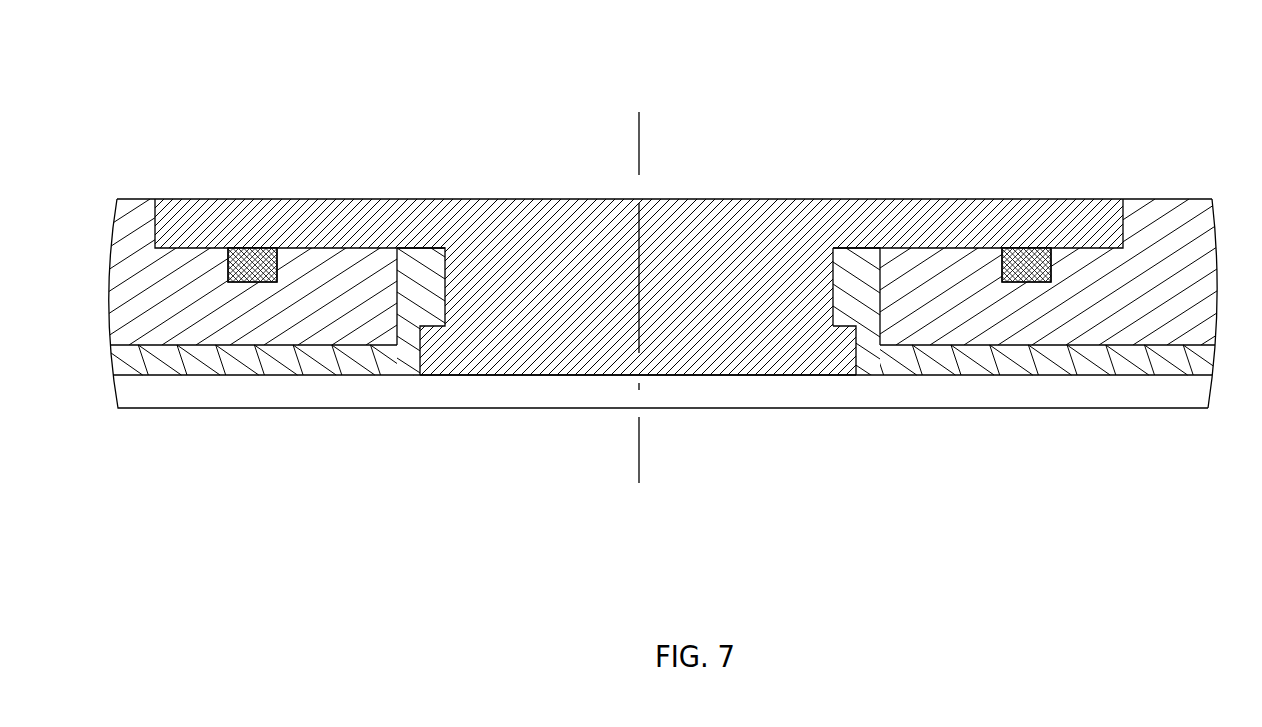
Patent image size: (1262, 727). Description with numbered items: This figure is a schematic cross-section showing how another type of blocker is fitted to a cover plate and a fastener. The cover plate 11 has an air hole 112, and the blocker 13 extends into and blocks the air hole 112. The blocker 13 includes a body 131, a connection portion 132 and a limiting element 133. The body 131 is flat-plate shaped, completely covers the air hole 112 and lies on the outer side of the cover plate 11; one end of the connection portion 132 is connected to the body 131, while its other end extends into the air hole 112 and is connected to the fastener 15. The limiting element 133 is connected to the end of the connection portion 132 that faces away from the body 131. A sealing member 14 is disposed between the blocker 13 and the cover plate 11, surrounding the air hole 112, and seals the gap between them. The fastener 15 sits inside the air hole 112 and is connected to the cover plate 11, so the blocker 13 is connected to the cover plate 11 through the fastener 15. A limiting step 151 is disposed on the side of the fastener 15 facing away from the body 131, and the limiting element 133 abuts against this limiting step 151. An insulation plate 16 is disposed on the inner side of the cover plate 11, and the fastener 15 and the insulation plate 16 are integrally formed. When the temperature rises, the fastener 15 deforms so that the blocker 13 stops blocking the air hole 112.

The cover plate 11 is at (1167, 222).
The air hole 112 is at (413, 265).
The blocker 13 is at (760, 266).
The body 131 is at (252, 200).
The connection portion 132 is at (550, 285).
The limiting element 133 is at (428, 353).
The sealing member 14 is at (1025, 250).
The fastener 15 is at (857, 277).
The limiting step 151 is at (843, 328).
The insulation plate 16 is at (1142, 363).